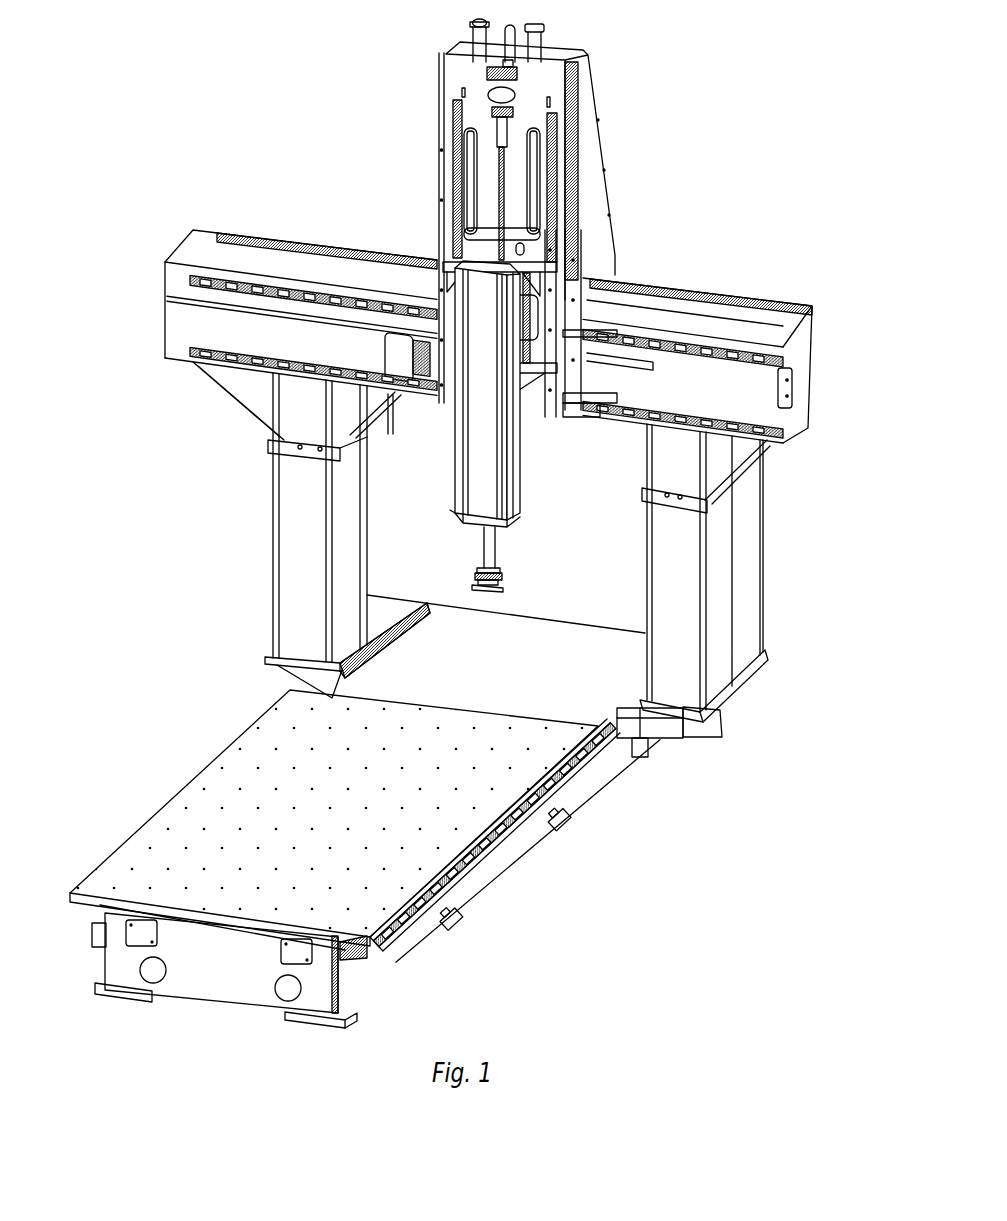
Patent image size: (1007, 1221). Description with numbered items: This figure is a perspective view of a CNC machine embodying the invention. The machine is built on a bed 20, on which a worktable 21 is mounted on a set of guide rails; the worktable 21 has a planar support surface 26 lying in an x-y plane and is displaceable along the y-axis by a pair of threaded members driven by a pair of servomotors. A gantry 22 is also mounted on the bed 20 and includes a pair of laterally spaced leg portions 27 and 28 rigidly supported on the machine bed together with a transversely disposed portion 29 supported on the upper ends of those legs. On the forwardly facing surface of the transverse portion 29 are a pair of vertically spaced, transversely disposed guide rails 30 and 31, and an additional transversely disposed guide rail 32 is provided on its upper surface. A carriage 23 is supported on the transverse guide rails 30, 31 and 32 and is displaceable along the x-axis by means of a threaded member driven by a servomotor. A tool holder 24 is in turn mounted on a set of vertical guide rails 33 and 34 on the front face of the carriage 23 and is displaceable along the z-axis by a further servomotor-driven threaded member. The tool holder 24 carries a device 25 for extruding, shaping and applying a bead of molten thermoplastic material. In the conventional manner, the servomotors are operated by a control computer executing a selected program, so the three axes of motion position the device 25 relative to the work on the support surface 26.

The bed 20 is at (578, 778).
The worktable 21 is at (113, 841).
The gantry 22 is at (248, 498).
The carriage 23 is at (440, 177).
The tool holder 24 is at (527, 470).
The device for extruding, shaping and applying a bead of molten thermoplastic materi 25 is at (505, 557).
The planar support surface 26 is at (202, 782).
The leg portion 27 is at (275, 549).
The leg portion 28 is at (755, 577).
The transversely disposed portion 29 is at (172, 323).
The guide rail 30 is at (800, 348).
The guide rail 31 is at (805, 417).
The guide rail 32 is at (752, 297).
The vertical guide rail 33 is at (443, 112).
The vertical guide rail 34 is at (563, 128).